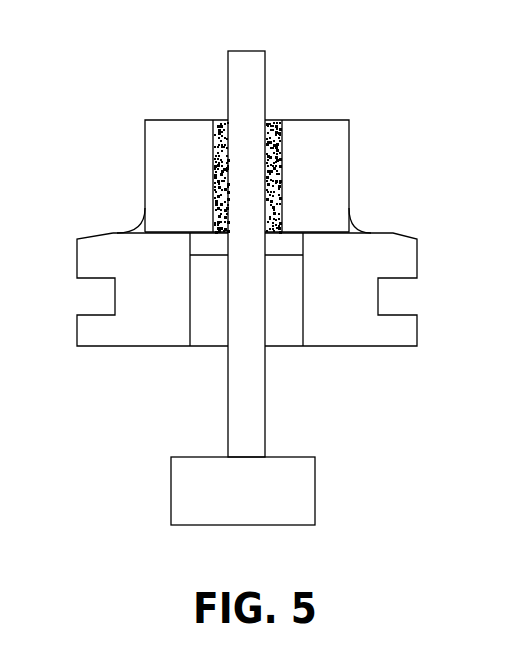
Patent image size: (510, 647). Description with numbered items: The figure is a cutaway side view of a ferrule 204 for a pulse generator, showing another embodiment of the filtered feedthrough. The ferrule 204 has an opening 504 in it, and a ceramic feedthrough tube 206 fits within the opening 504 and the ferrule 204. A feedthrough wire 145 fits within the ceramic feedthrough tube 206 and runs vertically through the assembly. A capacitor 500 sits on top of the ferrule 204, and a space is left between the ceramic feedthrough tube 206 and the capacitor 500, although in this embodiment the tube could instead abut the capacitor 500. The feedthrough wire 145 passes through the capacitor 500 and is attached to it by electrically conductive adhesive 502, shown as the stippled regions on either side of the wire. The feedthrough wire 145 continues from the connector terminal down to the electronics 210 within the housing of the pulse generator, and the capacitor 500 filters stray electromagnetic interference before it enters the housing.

The feedthrough wire 145 is at (247, 50).
The capacitor 500 is at (349, 138).
The electrically conductive adhesive 502 is at (274, 118).
The ferrule 204 is at (363, 333).
The ceramic feedthrough tube 206 is at (288, 292).
The opening 504 is at (302, 325).
The electronics 210 is at (193, 457).